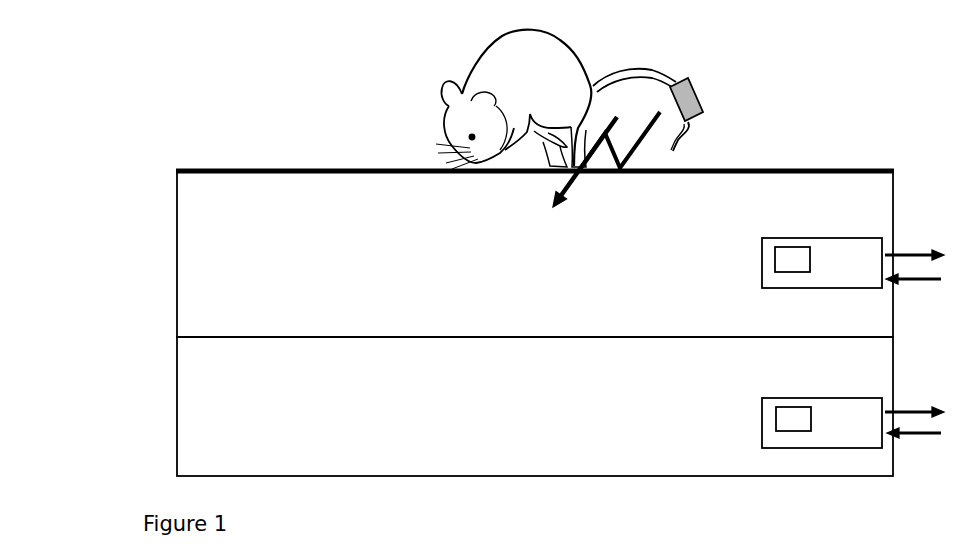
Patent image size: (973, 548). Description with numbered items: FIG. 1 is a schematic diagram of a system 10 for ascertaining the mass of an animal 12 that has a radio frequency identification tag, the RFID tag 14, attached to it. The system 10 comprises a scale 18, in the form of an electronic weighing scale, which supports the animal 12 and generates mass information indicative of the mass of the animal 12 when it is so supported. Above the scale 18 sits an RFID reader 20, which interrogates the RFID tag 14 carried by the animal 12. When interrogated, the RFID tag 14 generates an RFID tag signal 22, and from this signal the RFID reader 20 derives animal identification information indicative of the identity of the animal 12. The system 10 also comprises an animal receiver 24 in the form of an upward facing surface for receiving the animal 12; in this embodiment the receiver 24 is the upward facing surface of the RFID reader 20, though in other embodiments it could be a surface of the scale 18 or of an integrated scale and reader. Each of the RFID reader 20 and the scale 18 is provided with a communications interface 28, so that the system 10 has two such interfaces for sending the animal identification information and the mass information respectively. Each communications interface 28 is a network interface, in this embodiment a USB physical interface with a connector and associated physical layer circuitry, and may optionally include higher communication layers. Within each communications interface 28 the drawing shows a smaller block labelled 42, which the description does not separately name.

The system 10 is at (123, 133).
The animal 12 is at (544, 66).
The RFID tag 14 is at (698, 92).
The scale 18 is at (218, 374).
The RFID reader 20 is at (220, 213).
The RFID tag signal 22 is at (637, 147).
The animal receiver 24 is at (388, 170).
The communications interface 28 is at (851, 272).
The antenna 42 is at (793, 339).